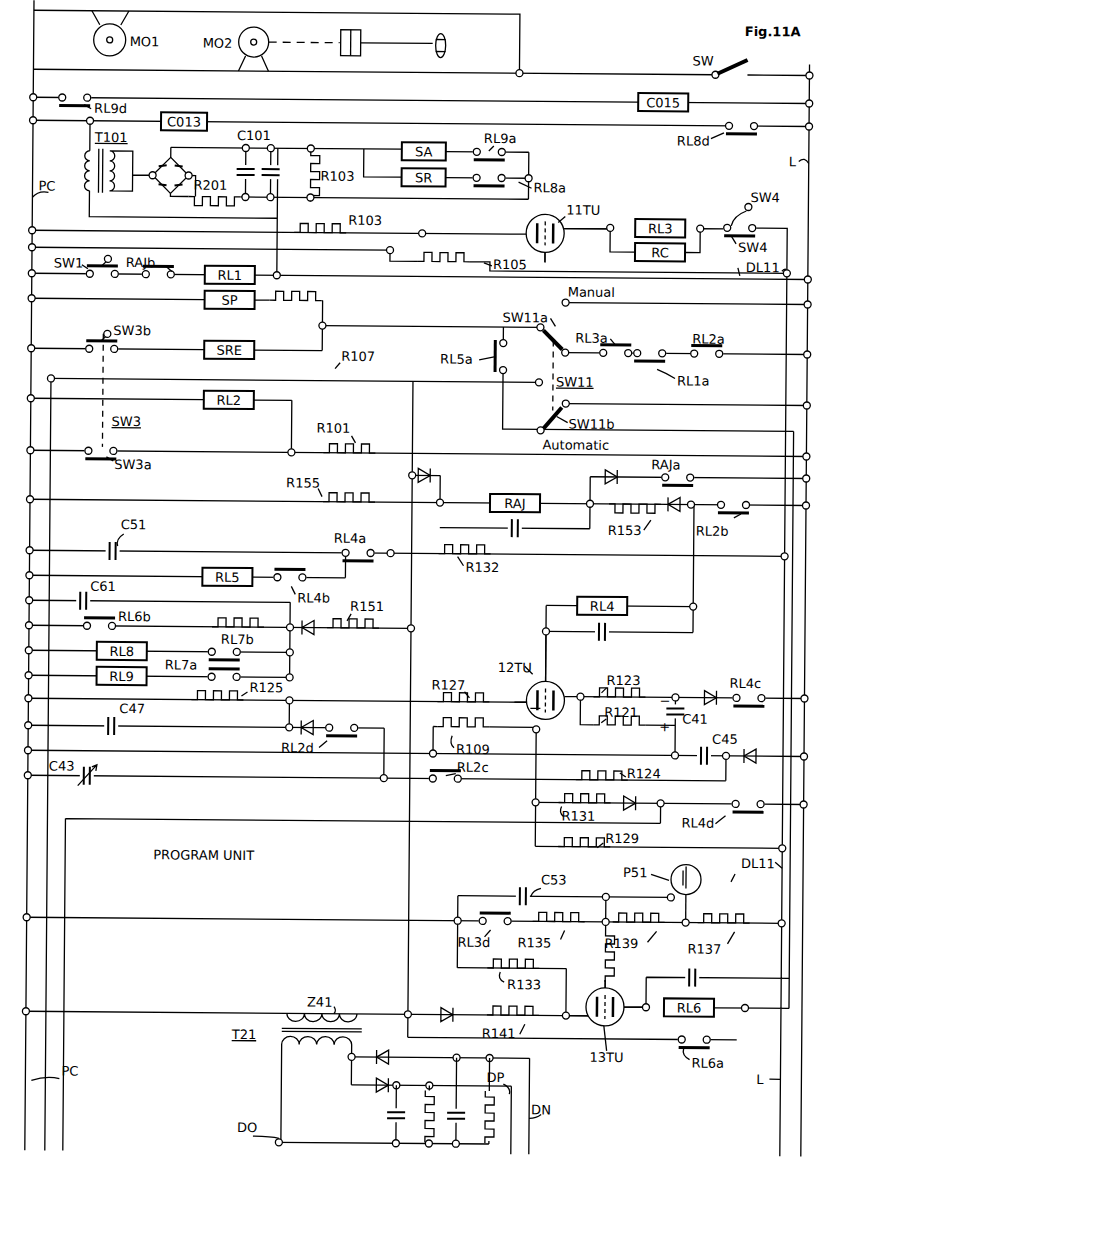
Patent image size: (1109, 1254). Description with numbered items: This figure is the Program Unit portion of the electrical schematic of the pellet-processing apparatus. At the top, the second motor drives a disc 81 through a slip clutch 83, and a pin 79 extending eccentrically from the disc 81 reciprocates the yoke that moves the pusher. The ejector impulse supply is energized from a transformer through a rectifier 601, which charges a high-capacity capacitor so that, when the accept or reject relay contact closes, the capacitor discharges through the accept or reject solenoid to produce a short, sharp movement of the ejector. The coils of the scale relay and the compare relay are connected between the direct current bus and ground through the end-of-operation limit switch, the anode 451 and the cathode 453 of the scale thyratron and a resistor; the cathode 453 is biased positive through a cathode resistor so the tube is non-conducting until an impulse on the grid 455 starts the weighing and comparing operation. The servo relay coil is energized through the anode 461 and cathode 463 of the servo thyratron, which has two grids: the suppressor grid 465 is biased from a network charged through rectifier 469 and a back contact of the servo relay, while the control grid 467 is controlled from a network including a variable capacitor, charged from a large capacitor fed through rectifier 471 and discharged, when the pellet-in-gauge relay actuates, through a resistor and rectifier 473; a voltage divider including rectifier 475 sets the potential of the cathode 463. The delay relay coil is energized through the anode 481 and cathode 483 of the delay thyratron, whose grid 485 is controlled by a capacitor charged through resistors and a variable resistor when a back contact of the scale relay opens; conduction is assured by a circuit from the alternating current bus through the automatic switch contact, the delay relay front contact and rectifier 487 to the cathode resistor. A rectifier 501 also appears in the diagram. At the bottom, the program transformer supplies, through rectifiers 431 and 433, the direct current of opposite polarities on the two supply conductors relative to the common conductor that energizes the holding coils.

The pin 79 is at (446, 42).
The disc 81 is at (428, 46).
The slip clutch 83 is at (341, 50).
The rectifier 601 is at (154, 176).
The anode 451 is at (566, 232).
The cathode 453 is at (530, 224).
The grid 455 is at (550, 250).
The anode 461 is at (560, 686).
The cathode 463 is at (545, 722).
The suppressor grid 465 is at (530, 690).
The control grid 467 is at (536, 706).
The rectifier 469 is at (712, 690).
The rectifier 471 is at (756, 756).
The rectifier 473 is at (310, 720).
The rectifier 475 is at (640, 796).
The anode 481 is at (313, 632).
The cathode 483 is at (690, 497).
The grid 485 is at (607, 470).
The rectifier 487 is at (453, 1006).
The diode 501 is at (428, 468).
The rectifier 431 is at (392, 1074).
The rectifier 433 is at (392, 1046).